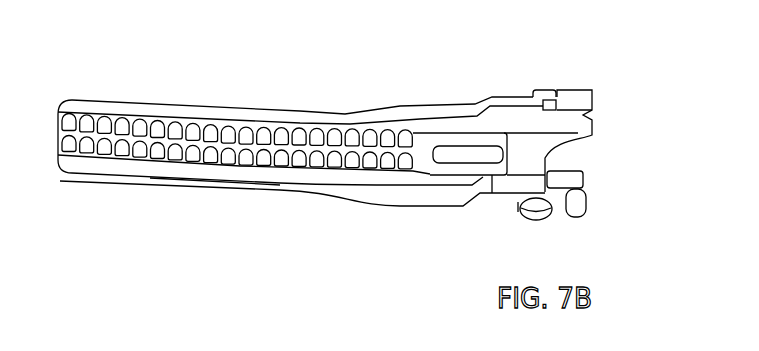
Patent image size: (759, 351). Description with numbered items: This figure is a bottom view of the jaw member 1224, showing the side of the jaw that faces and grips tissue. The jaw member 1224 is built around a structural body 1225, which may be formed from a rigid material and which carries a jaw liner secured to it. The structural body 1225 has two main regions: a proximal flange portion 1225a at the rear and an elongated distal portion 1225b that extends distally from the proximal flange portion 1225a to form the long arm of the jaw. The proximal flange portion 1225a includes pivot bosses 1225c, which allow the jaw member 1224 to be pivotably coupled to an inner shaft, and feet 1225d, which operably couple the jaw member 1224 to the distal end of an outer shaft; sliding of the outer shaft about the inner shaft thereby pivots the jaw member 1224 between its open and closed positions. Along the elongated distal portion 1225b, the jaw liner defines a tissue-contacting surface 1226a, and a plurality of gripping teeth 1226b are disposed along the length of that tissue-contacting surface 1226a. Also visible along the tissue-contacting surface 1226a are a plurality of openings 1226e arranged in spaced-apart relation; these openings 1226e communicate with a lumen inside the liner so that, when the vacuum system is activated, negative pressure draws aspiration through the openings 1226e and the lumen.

The jaw member 1224 is at (375, 147).
The structural body 1225 is at (376, 221).
The proximal flange portion 1225a is at (570, 218).
The elongated distal portion 1225b is at (220, 186).
The pivot bosses 1225c is at (535, 221).
The feet 1225d is at (585, 177).
The tissue-contacting surface 1226a is at (244, 146).
The gripping teeth 1226b is at (278, 128).
The openings 1226e is at (133, 125).